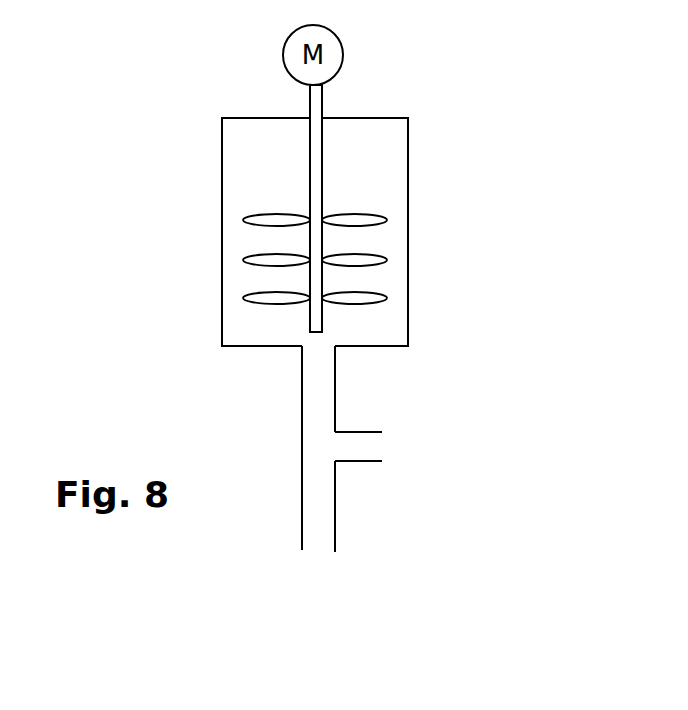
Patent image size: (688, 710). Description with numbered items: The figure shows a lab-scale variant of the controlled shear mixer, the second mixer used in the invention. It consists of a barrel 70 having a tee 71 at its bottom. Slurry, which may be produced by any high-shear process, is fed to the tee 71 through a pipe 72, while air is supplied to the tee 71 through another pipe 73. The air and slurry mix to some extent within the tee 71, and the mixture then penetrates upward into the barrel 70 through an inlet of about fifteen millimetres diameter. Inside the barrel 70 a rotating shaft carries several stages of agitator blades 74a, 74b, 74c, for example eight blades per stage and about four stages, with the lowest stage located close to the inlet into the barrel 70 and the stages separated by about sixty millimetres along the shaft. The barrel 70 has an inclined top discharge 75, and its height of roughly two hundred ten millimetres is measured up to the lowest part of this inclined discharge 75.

The barrel 70 is at (222, 330).
The tee 71 is at (302, 452).
The pipe 72 is at (302, 540).
The pipe 73 is at (356, 432).
The agitator blade 74a is at (378, 295).
The agitator blade 74b is at (378, 255).
The agitator blade 74c is at (373, 213).
The inclined top discharge 75 is at (408, 148).